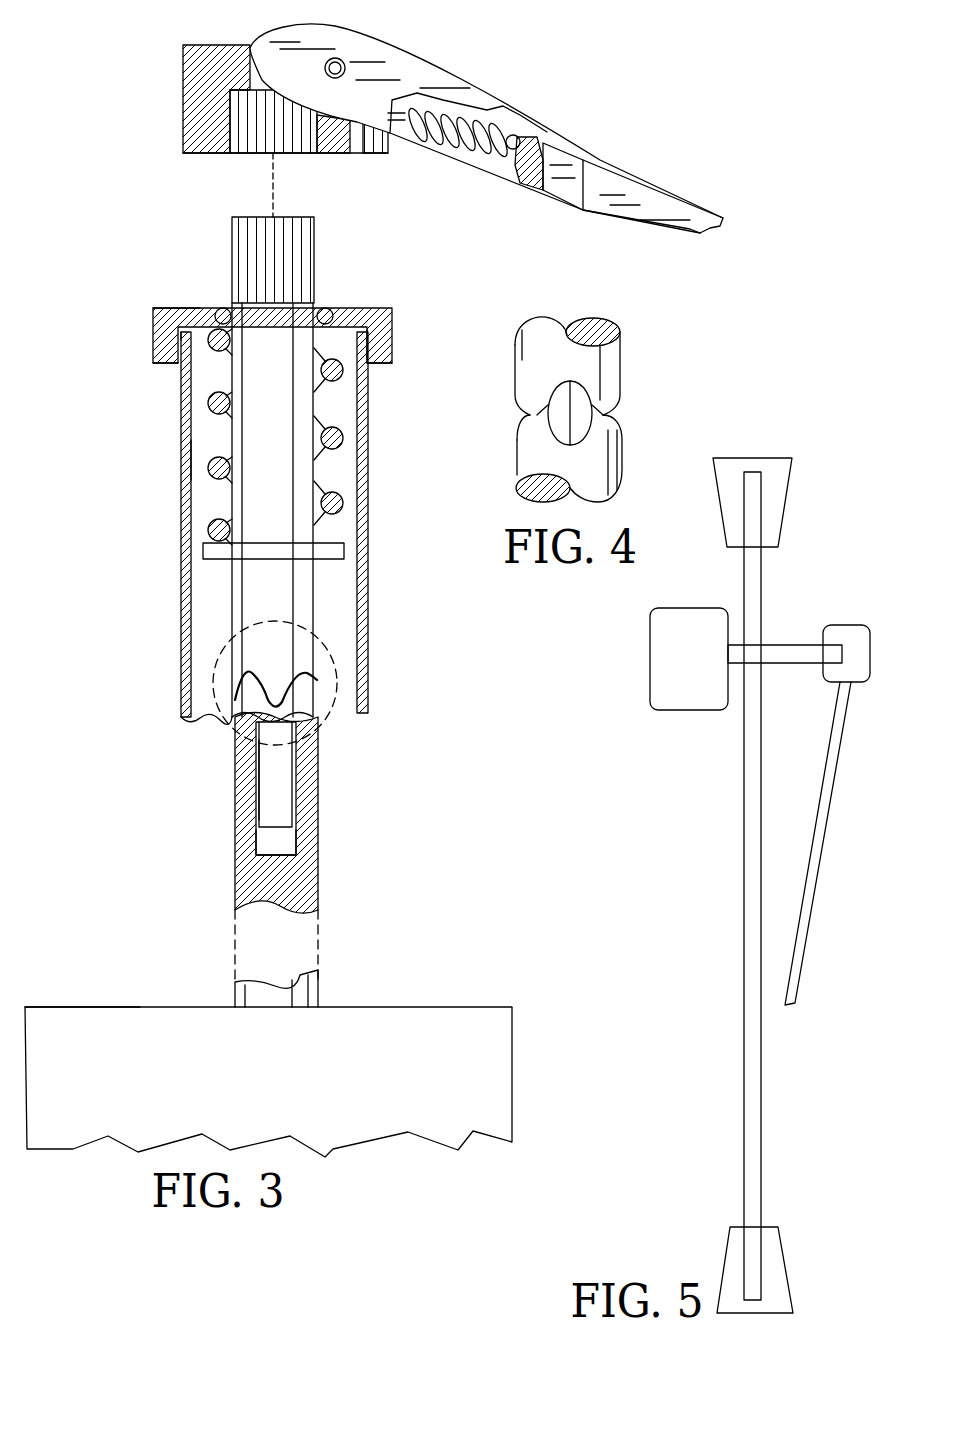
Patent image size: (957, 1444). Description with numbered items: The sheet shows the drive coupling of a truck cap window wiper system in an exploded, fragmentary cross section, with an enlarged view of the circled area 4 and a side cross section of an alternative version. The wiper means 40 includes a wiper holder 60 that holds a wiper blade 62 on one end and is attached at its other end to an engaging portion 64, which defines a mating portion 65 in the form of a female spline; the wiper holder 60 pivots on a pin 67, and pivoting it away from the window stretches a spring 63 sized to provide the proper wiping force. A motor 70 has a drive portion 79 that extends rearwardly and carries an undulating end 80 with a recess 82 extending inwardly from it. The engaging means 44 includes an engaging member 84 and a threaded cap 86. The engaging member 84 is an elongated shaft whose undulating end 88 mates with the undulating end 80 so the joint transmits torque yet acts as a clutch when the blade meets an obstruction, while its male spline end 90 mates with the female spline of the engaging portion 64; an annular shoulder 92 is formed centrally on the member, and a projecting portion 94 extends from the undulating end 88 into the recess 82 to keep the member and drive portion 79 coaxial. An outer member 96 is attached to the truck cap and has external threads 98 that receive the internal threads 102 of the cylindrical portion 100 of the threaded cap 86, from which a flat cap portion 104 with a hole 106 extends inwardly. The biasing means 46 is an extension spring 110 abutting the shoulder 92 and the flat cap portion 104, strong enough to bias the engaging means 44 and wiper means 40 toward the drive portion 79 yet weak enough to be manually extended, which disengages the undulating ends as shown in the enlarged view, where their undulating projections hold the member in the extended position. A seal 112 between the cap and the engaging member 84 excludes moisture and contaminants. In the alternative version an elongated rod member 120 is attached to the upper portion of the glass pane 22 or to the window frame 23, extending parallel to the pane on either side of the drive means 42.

In FIG. 3, the circled area labeled FIG. 4 is at (340, 690).
In FIG. 5, the glass pane 22 is at (745, 1017).
In FIG. 5, the truck cap window frame 23 is at (790, 485).
In FIG. 3, the wiper means 40 is at (545, 100).
In FIG. 3, the drive means 42 is at (148, 1000).
In FIG. 3, the engaging means 44 is at (128, 418).
In FIG. 3, the biasing means 46 is at (200, 462).
In FIG. 3, the wiper holder 60 is at (525, 182).
In FIG. 5, the wiper blade 62 is at (820, 885).
In FIG. 3, the spring 63 is at (462, 152).
In FIG. 3, the engaging portion 64 is at (205, 88).
In FIG. 3, the mating portion 65 is at (245, 130).
In FIG. 3, the pin 67 is at (345, 65).
In FIG. 3, the motor 70 is at (385, 1047).
In FIG. 5, the motor 70 is at (690, 683).
In FIG. 3, the drive portion 79 is at (307, 870).
In FIG. 4, the drive portion 79 is at (612, 470).
In FIG. 3, the undulating end 80 is at (215, 712).
In FIG. 4, the undulating end 80 is at (540, 432).
In FIG. 3, the recess 82 is at (283, 848).
In FIG. 3, the engaging member 84 is at (300, 590).
In FIG. 4, the engaging member 84 is at (604, 362).
In FIG. 3, the threaded cap 86 is at (385, 345).
In FIG. 3, the undulating end 88 is at (240, 688).
In FIG. 4, the undulating end 88 is at (604, 405).
In FIG. 3, the male spline end 90 is at (293, 240).
In FIG. 3, the annular shoulder 92 is at (235, 550).
In FIG. 3, the projecting portion 94 is at (268, 797).
In FIG. 4, the projecting portion 94 is at (565, 415).
In FIG. 3, the outer member 96 is at (180, 512).
In FIG. 3, the external threads 98 is at (180, 365).
In FIG. 3, the cylindrical portion 100 is at (387, 312).
In FIG. 3, the internal threads 102 is at (370, 363).
In FIG. 3, the flat cap portion 104 is at (195, 306).
In FIG. 3, the hole 106 is at (325, 307).
In FIG. 3, the extension spring 110 is at (360, 460).
In FIG. 3, the seal 112 is at (223, 308).
In FIG. 5, the rod member 120 is at (785, 645).